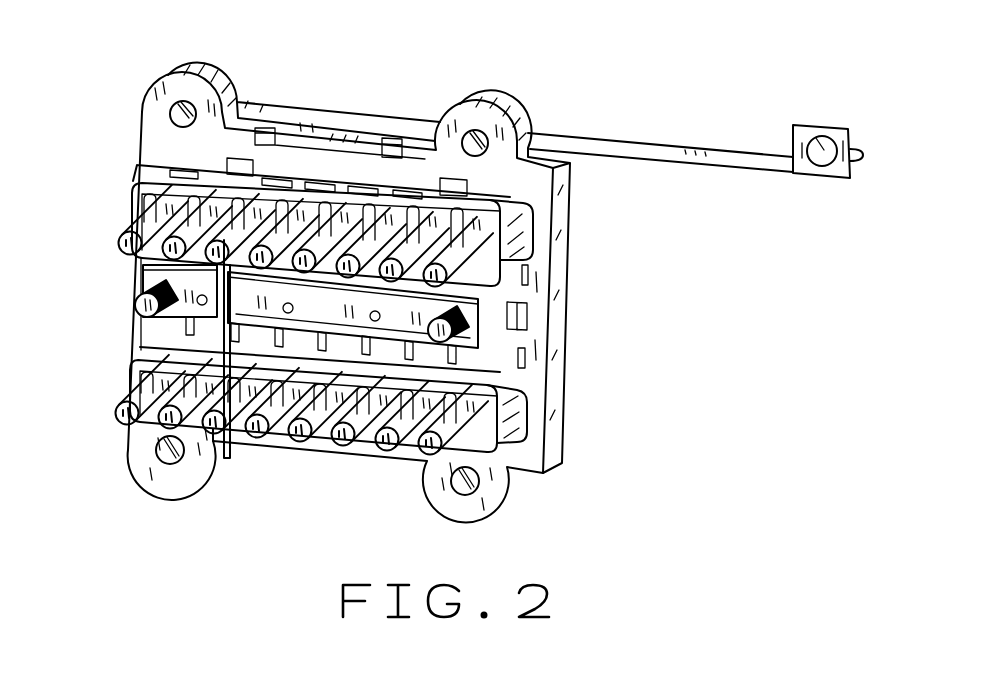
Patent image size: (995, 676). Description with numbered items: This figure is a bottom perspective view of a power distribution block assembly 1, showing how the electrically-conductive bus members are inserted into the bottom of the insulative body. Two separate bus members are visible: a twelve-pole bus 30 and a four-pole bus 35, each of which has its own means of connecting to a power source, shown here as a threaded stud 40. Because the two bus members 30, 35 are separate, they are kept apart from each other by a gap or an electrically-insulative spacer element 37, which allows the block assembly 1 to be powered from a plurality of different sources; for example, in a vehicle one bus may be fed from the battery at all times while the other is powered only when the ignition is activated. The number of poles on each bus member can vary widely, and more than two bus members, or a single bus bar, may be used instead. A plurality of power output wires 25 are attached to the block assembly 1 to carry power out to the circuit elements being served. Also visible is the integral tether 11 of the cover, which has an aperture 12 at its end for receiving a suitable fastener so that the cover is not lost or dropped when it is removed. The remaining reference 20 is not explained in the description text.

The power distribution block assembly 1 is at (440, 275).
The tether 11 is at (637, 142).
The aperture 12 is at (823, 148).
The mounting plate 20 is at (330, 118).
The power output wires 25 is at (145, 400).
The bus member 30 is at (407, 328).
The bus member 35 is at (189, 312).
The electrically-insulative spacer element 37 is at (224, 352).
The threaded stud 40 is at (138, 298).